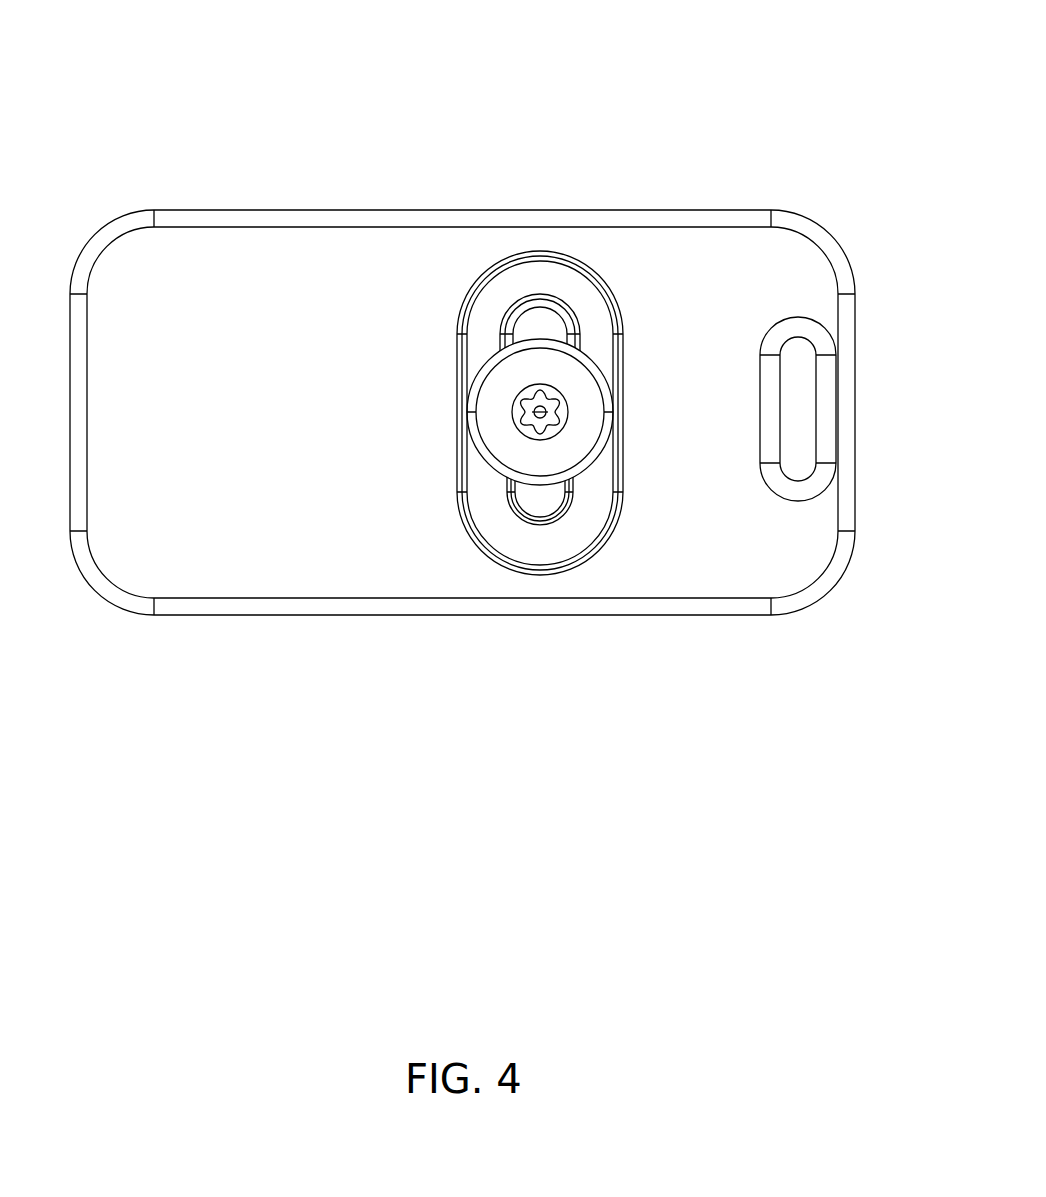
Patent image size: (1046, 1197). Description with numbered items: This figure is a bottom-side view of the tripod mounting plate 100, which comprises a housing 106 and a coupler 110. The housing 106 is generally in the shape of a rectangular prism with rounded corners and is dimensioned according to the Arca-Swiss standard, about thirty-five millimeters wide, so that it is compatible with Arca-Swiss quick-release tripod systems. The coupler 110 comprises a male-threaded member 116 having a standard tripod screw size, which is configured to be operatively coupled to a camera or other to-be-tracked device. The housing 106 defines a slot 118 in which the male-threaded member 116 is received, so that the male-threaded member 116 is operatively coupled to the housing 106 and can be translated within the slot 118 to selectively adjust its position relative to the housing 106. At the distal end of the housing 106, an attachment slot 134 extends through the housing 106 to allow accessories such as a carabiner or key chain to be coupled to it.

The tripod mounting plate 100 is at (360, 62).
The housing 106 is at (199, 263).
The coupler 110 is at (503, 440).
The male-threaded member 116 is at (503, 382).
The slot 118 is at (540, 497).
The attachment slot 134 is at (802, 430).